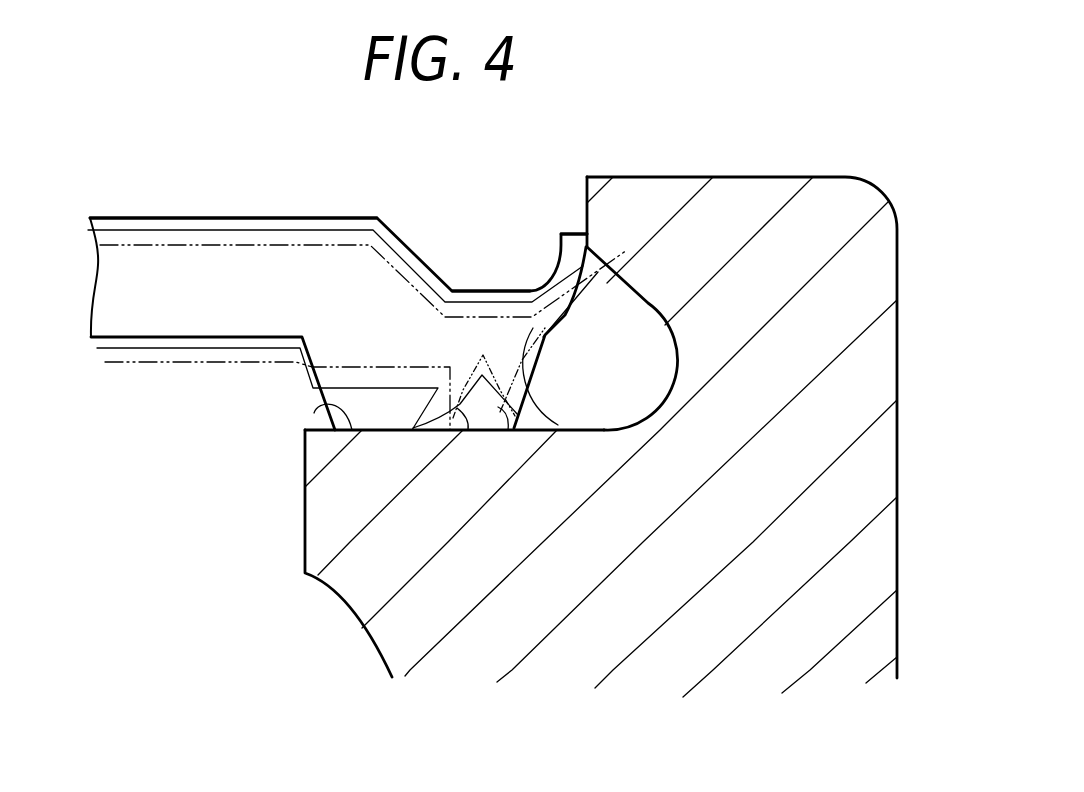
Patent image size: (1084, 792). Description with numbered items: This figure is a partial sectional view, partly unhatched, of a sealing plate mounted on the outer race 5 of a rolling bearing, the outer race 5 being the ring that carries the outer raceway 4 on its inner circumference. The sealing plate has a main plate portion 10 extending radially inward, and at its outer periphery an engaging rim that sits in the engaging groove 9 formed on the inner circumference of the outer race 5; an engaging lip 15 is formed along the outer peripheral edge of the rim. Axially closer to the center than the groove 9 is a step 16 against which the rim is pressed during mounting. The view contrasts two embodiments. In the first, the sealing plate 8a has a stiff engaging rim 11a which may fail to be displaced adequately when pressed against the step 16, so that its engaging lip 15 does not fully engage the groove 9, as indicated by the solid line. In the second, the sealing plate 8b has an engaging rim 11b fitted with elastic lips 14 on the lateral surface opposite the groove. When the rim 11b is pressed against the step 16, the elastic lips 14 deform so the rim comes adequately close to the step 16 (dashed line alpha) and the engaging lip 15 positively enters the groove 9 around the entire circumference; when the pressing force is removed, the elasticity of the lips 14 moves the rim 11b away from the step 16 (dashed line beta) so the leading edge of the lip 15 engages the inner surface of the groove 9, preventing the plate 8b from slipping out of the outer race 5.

The outer raceway 4 is at (350, 604).
The outer race 5 is at (877, 465).
The sealing plate 8a is at (140, 218).
The sealing plate 8b is at (313, 246).
The engaging groove 9 is at (661, 405).
The main plate portion 10 is at (235, 247).
The engaging rim 11a is at (512, 290).
The engaging rim 11b is at (470, 317).
The elastic lips 14 is at (458, 410).
The engaging lip 15 is at (620, 265).
The step 16 is at (318, 408).